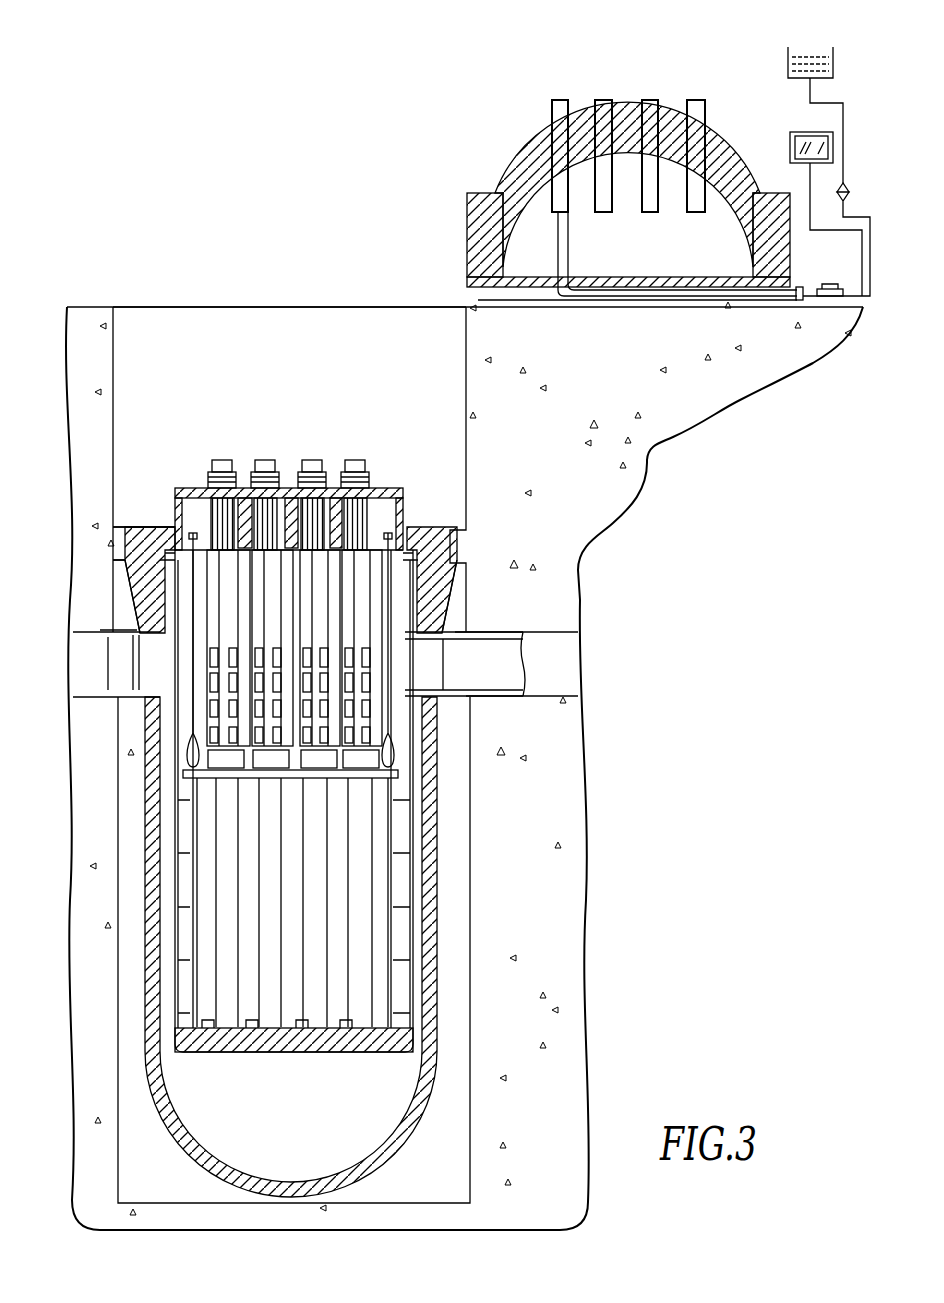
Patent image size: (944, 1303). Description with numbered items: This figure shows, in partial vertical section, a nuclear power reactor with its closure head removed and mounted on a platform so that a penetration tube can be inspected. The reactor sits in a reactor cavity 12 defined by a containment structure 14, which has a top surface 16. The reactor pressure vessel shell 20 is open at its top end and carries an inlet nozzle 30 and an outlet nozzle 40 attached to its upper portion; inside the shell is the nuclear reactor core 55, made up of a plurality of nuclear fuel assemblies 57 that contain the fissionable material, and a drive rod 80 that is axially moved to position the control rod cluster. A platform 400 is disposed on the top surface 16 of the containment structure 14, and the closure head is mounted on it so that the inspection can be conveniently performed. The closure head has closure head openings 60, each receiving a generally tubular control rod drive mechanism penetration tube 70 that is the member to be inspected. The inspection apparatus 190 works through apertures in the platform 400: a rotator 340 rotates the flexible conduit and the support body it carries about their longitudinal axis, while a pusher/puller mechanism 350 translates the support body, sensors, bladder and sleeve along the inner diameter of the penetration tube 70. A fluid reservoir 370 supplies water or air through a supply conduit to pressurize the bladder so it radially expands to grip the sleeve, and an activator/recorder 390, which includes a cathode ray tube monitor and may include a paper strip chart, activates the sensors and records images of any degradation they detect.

The reactor cavity 12 is at (112, 337).
The containment structure 14 is at (96, 326).
The top surface 16 is at (80, 307).
The reactor pressure vessel shell 20 is at (440, 781).
The inlet nozzle 30 is at (128, 622).
The outlet nozzle 40 is at (443, 620).
The nuclear reactor core 55 is at (374, 940).
The nuclear fuel assembly 57 is at (360, 997).
The closure head opening 60 is at (558, 129).
The control rod drive mechanism penetration tube 70 is at (553, 108).
The drive rod 80 is at (390, 488).
The inspection apparatus 190 is at (775, 92).
The rotator 340 is at (800, 288).
The pusher/puller mechanism 350 is at (820, 288).
The fluid reservoir 370 is at (788, 60).
The activator/recorder 390 is at (788, 147).
The platform 400 is at (466, 278).